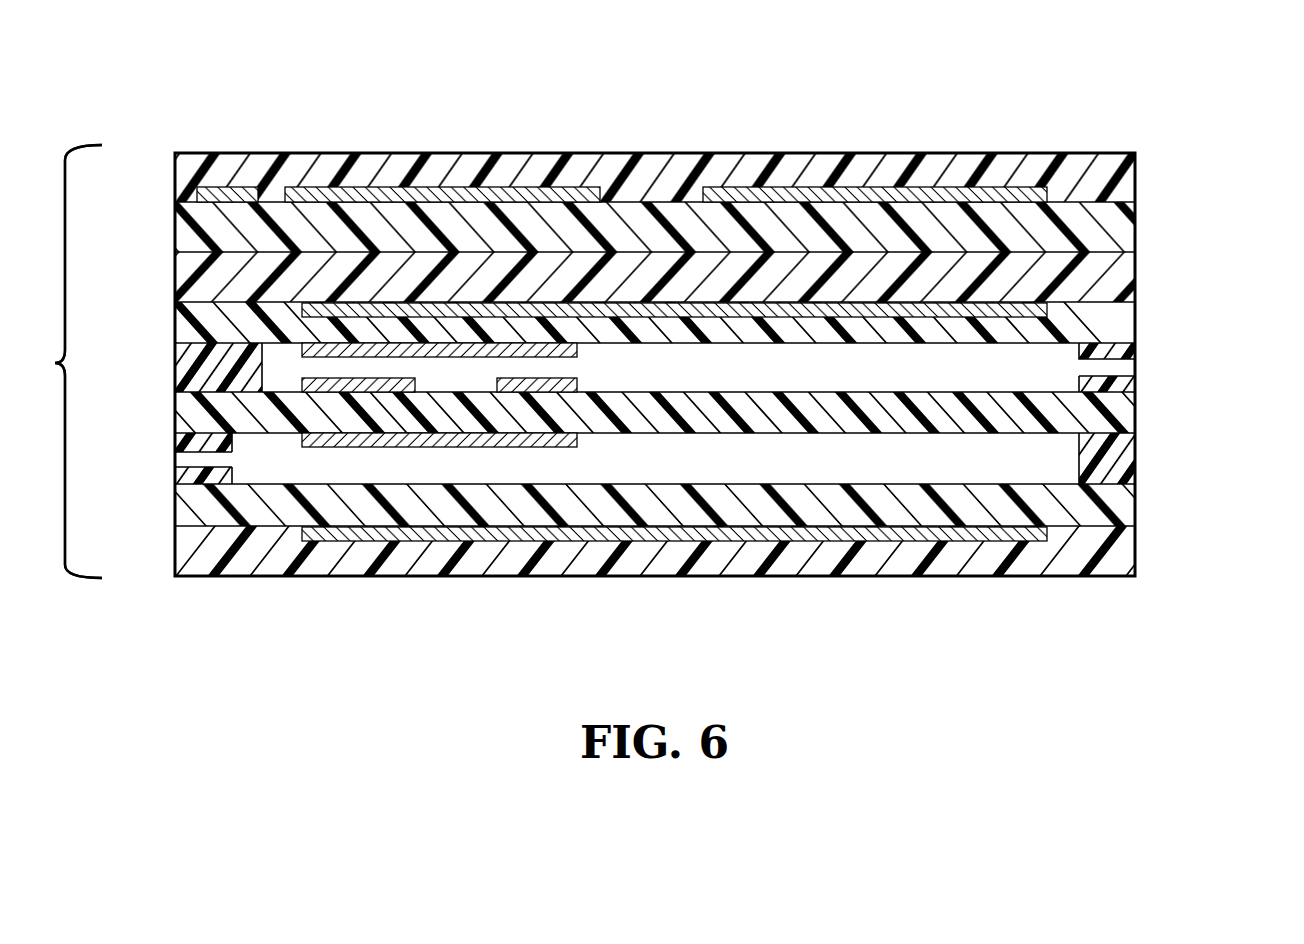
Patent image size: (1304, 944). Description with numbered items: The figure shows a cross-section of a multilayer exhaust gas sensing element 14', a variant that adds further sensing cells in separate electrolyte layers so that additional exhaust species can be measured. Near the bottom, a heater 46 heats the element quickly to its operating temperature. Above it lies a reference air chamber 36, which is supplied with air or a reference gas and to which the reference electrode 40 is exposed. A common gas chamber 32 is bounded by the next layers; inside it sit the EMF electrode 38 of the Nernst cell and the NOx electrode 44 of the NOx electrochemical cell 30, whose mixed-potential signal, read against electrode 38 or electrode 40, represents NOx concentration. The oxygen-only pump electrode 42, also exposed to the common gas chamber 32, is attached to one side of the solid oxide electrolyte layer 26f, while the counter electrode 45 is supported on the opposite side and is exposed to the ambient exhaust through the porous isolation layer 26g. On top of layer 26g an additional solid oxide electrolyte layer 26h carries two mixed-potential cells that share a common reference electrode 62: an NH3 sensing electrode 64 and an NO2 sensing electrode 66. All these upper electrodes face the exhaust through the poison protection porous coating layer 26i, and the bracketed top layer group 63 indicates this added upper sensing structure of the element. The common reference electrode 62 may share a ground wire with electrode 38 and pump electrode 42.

The sensing element 14' is at (59, 361).
The poison protection porous coating layer 26i is at (1123, 190).
The solid oxide electrolyte layer 26h is at (1127, 242).
The porous isolation layer 26g is at (1122, 268).
The solid oxide electrolyte layer 26f is at (1128, 318).
The top layer stack 63 is at (272, 138).
The common reference electrode 62 is at (213, 198).
The NH3 sensing electrode 64 is at (385, 188).
The NO2 sensing electrode 66 is at (805, 188).
The counter electrode 45 is at (617, 305).
The oxygen-only pump electrode 42 is at (312, 349).
The NOx electrode 44 is at (347, 393).
The EMF electrode 38 is at (524, 384).
The reference electrode 40 is at (548, 447).
The heater 46 is at (805, 537).
The common gas chamber 32 is at (1052, 368).
The reference air chamber 36 is at (1050, 461).
The NOx electrochemical cell 30 is at (925, 373).